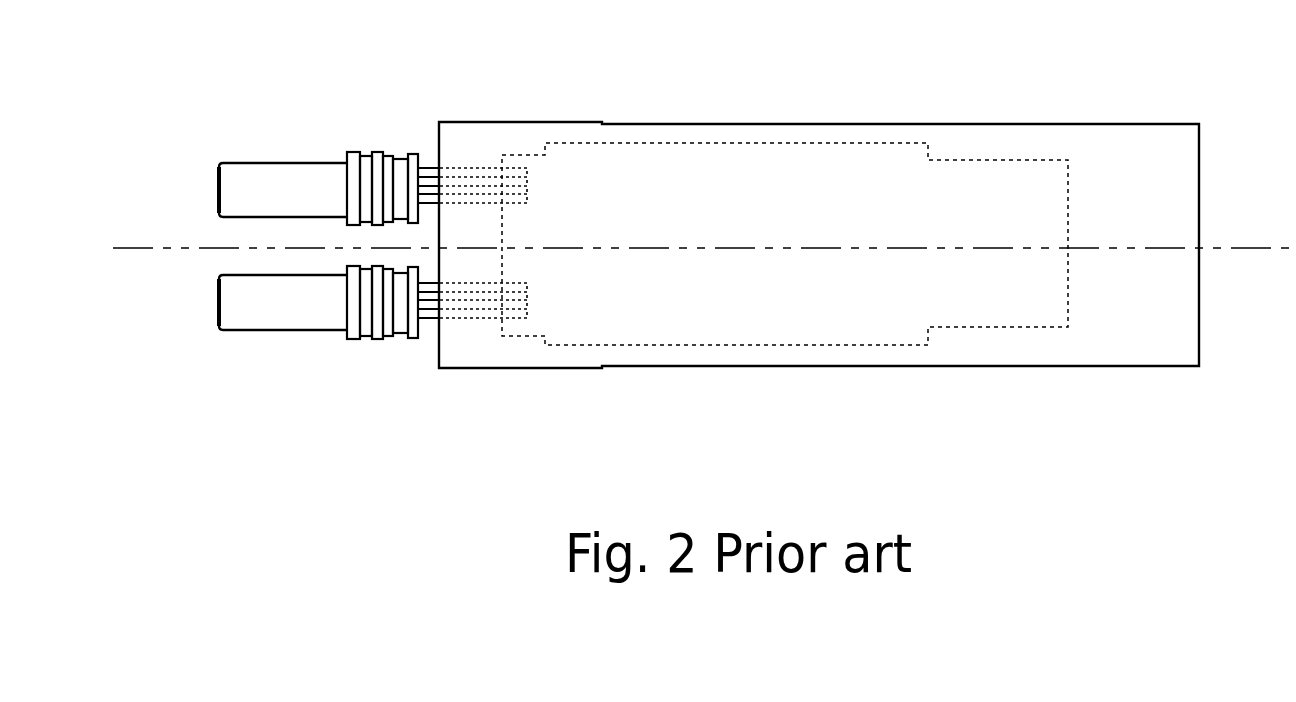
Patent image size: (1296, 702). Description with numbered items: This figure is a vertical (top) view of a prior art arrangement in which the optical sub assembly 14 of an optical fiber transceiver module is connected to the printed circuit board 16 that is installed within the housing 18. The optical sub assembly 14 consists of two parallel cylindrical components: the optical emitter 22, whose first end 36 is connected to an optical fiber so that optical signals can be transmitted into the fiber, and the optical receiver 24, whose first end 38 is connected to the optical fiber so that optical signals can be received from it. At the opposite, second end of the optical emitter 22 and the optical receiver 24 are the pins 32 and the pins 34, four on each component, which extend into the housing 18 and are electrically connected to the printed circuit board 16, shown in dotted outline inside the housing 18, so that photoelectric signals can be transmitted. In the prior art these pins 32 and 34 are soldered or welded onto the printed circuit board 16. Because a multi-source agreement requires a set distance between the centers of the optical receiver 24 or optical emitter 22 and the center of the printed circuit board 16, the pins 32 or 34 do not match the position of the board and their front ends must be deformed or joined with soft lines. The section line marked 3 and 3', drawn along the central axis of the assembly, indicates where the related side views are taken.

The optical sub assembly 14 is at (167, 288).
The printed circuit board 16 is at (807, 153).
The housing 18 is at (1038, 123).
The optical emitter 22 is at (388, 337).
The optical receiver 24 is at (390, 153).
The pins 32 is at (482, 322).
The pins 34 is at (480, 168).
The first end 36 is at (290, 315).
The first end 38 is at (290, 177).
The dotted line 3 is at (1279, 179).
The dotted line 3' is at (161, 180).